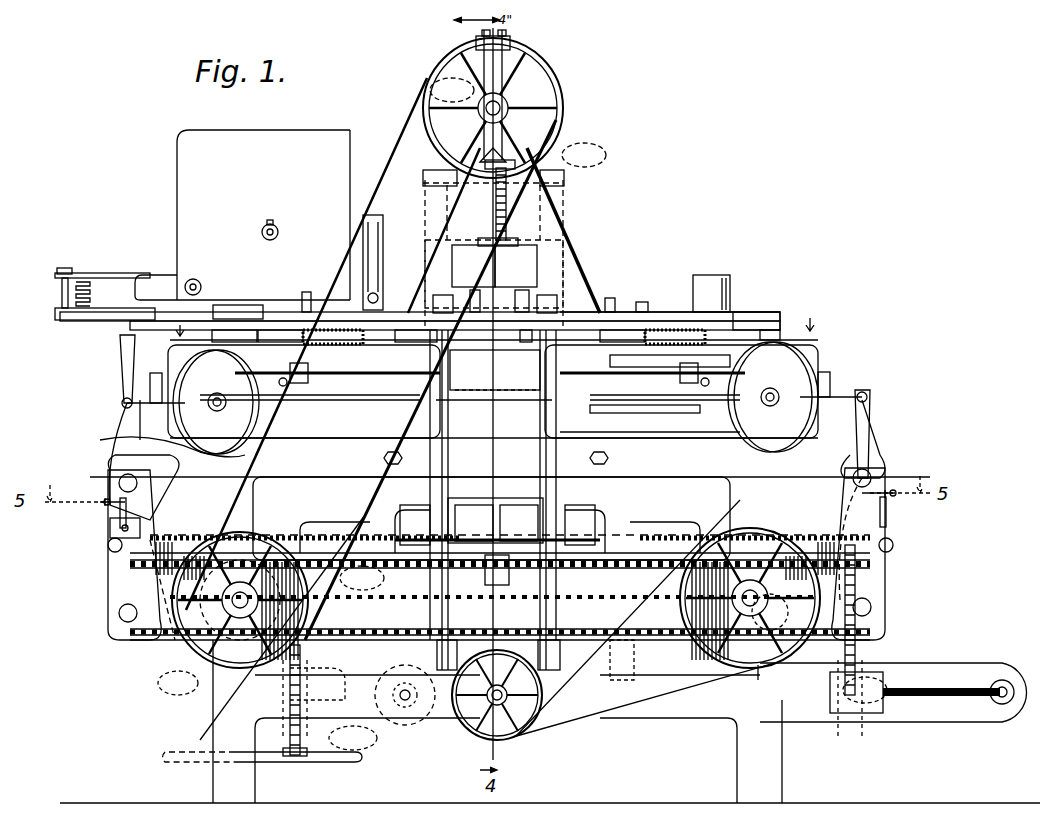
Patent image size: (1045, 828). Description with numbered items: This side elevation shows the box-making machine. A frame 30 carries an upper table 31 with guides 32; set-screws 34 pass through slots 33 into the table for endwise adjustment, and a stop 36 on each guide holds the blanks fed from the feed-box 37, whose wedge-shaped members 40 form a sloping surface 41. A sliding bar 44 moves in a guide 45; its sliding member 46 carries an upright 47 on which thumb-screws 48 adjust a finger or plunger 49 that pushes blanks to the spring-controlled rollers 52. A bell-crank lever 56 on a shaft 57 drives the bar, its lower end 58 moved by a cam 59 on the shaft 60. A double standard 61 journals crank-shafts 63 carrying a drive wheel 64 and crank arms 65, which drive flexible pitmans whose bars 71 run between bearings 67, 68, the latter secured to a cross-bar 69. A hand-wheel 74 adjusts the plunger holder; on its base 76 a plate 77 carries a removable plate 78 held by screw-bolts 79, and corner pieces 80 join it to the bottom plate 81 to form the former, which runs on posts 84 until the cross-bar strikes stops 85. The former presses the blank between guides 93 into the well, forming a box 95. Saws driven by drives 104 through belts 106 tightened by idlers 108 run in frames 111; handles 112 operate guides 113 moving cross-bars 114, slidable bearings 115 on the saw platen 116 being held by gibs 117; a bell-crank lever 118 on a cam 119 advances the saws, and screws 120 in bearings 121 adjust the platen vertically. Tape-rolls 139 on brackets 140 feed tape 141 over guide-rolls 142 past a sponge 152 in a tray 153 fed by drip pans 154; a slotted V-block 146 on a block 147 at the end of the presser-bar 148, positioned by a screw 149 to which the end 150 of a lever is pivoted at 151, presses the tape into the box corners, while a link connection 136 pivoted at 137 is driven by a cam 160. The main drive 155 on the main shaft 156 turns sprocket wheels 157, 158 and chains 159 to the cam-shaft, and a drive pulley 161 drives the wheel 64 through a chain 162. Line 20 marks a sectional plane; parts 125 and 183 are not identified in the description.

The section line 20— 20 is at (508, 324).
The frame 30 is at (680, 470).
The upper table 31 is at (645, 322).
The guides 32 is at (527, 287).
The slots 33 is at (632, 312).
The set-screws 34 is at (693, 290).
The stop 36 is at (575, 290).
The feed-box 37 is at (350, 158).
The wedge-shaped members 40 is at (158, 278).
The sloping surface 41 is at (170, 280).
The sliding bar 44 is at (100, 322).
The guide 45 is at (236, 305).
The sliding member 46 is at (62, 322).
The upright 47 is at (99, 294).
The thumb-screws 48 is at (68, 272).
The finger or plunger 49 is at (96, 272).
The spring-controlled rollers 52 is at (370, 298).
The bell-crank lever 56 is at (122, 380).
The shaft 57 is at (118, 483).
The lower end of lever 58 is at (375, 262).
The cam 59 is at (362, 578).
The cam-shaft 60 is at (180, 630).
The double standard 61 is at (565, 252).
The crank-shafts 63 is at (501, 104).
The drive wheel 64 is at (432, 140).
The crank arms 65 is at (538, 96).
The upper bearing 67 is at (512, 42).
The lower bearing 68 is at (584, 155).
The cross-bar 69 is at (564, 178).
The pitman bars 71 is at (452, 90).
The hand-wheel 74 is at (494, 200).
The base of plunger shaft 76 is at (516, 266).
The reinforcing plate 77 is at (492, 138).
The removable plate 78 is at (473, 266).
The screw-bolts 79 is at (505, 235).
The corner pieces 80 is at (496, 298).
The bottom plate 81 is at (495, 370).
The posts or guides 84 is at (545, 412).
The stops 85 is at (542, 305).
The guides 93 is at (555, 487).
The box 95 is at (560, 428).
The drives 104 is at (474, 523).
The belts 106 is at (480, 571).
The idlers 108 is at (100, 654).
The saw frames 111 is at (572, 510).
The handles 112 is at (892, 512).
The guides 113 is at (262, 510).
The horizontal cross-bars 114 is at (512, 519).
The slidable bearings 115 is at (296, 530).
The saw platen 116 is at (378, 614).
The gibs 117 is at (330, 545).
The bell-crank lever 118 is at (125, 572).
The cam 119 is at (522, 690).
The screws 120 is at (360, 648).
The bearings 121 is at (640, 690).
The nut 125 is at (386, 458).
The link connection 136 is at (830, 395).
The pivot 137 is at (158, 423).
The tape-rolls 139 is at (228, 405).
The brackets 140 is at (681, 391).
The tape 141 is at (794, 333).
The guide-rolls 142 is at (324, 335).
The slotted V-block 146 is at (497, 386).
The block 147 is at (663, 358).
The presser-bar 148 is at (818, 306).
The screw 149 is at (330, 392).
The end of bell-crank lever 150 is at (495, 398).
The pivot 151 is at (649, 406).
The sponge 152 is at (790, 300).
The tray 153 is at (481, 335).
The drip pans 154 is at (250, 305).
The main drive 155 is at (815, 640).
The main shaft 156 is at (756, 680).
The sprocket wheel 157 is at (790, 612).
The sprocket wheel 158 is at (240, 618).
The chains 159 is at (640, 612).
The cam 160 is at (145, 590).
The drive pulley 161 is at (105, 548).
The chain 162 is at (100, 440).
The roller 183 is at (420, 722).